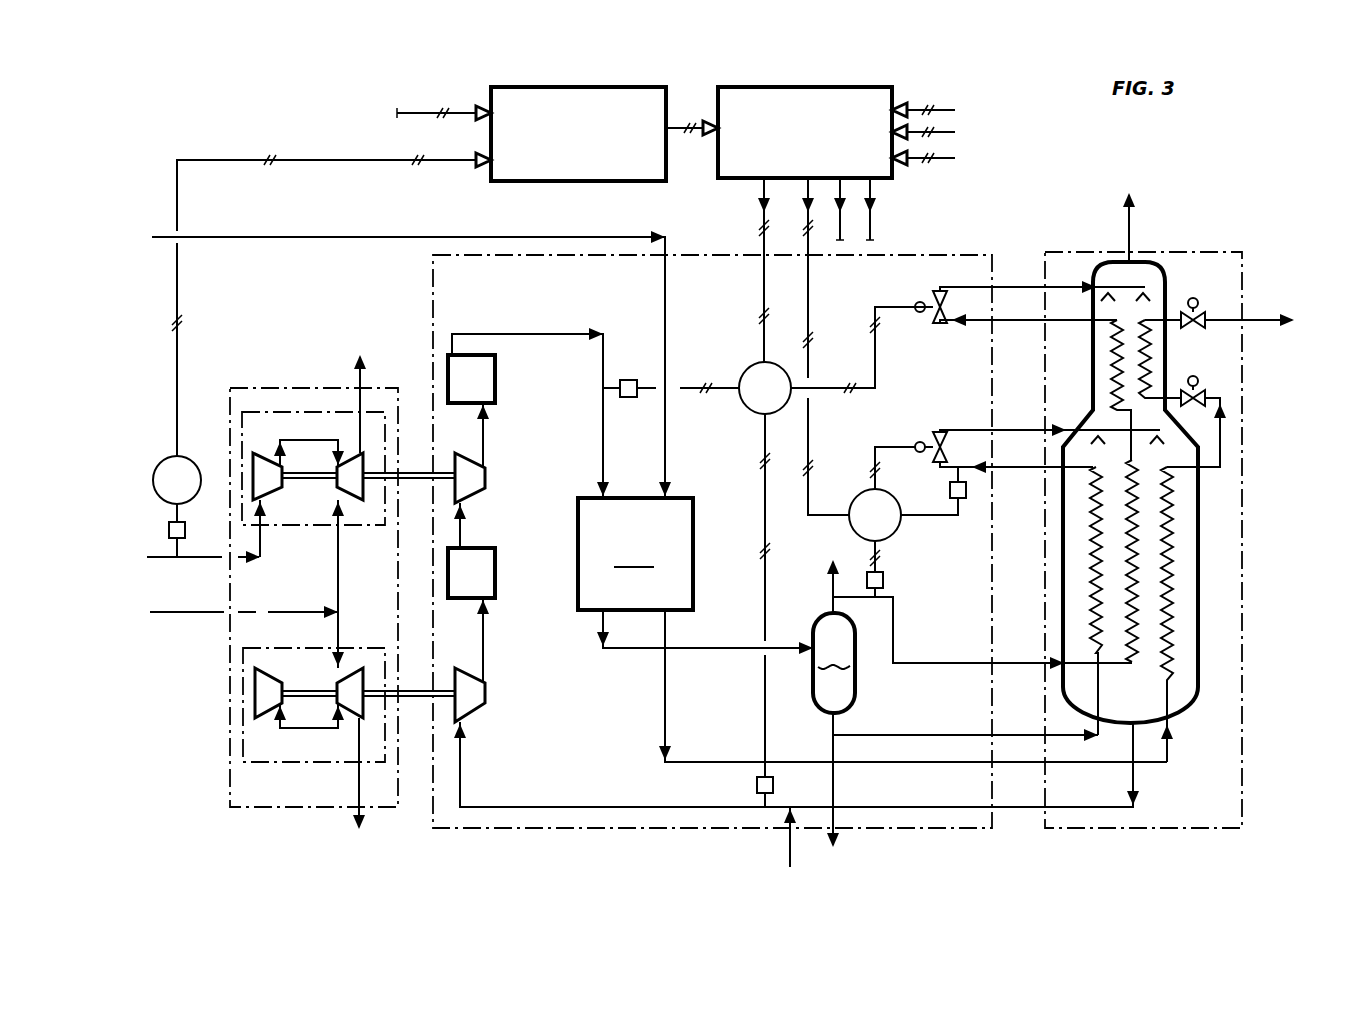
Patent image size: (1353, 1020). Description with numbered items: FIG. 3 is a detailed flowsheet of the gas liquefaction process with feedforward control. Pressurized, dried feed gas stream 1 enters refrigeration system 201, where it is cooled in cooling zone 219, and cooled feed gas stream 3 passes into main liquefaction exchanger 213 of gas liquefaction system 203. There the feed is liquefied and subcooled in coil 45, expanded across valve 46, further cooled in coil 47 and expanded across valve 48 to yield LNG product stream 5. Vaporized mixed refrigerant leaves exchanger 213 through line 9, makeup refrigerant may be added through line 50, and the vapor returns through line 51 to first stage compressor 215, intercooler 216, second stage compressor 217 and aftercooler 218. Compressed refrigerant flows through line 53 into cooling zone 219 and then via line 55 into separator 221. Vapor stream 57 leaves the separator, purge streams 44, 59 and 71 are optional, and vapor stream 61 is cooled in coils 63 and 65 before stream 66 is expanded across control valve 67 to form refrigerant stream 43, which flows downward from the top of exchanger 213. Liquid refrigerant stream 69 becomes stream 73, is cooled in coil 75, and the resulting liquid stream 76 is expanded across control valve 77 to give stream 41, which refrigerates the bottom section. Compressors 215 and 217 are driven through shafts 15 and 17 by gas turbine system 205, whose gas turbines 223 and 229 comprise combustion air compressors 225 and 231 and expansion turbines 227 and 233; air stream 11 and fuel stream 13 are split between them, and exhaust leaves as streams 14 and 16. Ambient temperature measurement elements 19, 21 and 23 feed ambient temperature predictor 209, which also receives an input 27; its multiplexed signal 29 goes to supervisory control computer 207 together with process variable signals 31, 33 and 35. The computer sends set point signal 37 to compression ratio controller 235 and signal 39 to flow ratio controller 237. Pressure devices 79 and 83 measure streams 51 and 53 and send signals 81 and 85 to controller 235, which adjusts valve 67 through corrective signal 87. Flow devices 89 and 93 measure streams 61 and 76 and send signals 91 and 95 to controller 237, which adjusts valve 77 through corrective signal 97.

The feed gas stream 1 is at (318, 236).
The cooled feed gas stream 3 is at (662, 726).
The LNG product stream 5 is at (1258, 318).
The line 9 is at (906, 806).
The air stream 11 is at (210, 556).
The fuel stream 13 is at (196, 610).
The exhaust stream 14 is at (372, 366).
The shaft 15 is at (424, 472).
The exhaust stream 16 is at (354, 814).
The shaft 17 is at (424, 690).
The ambient air temperature measurement/transmission element 19 is at (168, 531).
The ambient air temperature measurement/transmission element 21 is at (154, 462).
The ambient air temperature measurement/transmission element 23 is at (175, 378).
The input signal line 27 is at (432, 110).
The multiplexed signal 29 is at (680, 124).
The representative signal 31 is at (946, 106).
The representative signal 33 is at (950, 134).
The representative signal 35 is at (948, 158).
The signal 37 is at (760, 306).
The signal 39 is at (810, 308).
The refrigerant stream 41 is at (962, 430).
The cooled refrigerant stream 43 is at (1012, 286).
The purge stream 44 is at (1126, 220).
The coil 45 is at (1166, 612).
The valve 46 is at (1204, 394).
The coil 47 is at (1152, 352).
The valve 48 is at (1208, 300).
The line 50 is at (786, 842).
The line 51 is at (512, 792).
The line 53 is at (522, 334).
The refrigerant line to separator 55 is at (728, 648).
The vapor stream 57 is at (826, 606).
The purge stream 59 is at (830, 592).
The MCR vapor stream 61 is at (896, 640).
The cooling coil 63 is at (1128, 522).
The cooling coil 65 is at (1110, 344).
The stream 66 is at (968, 328).
The control valve 67 is at (932, 310).
The liquid refrigerant stream 69 is at (836, 730).
The purge stream 71 is at (846, 840).
The liquid refrigerant stream 73 is at (972, 736).
The cooling coil 75 is at (1090, 568).
The liquid refrigerant stream 76 is at (1018, 470).
The control valve 77 is at (933, 437).
The pressure measurement/transmitter device 79 is at (756, 786).
The signal 81 is at (762, 502).
The pressure measurement/transmitter device 83 is at (630, 380).
The signal 85 is at (696, 390).
The corrective signal 87 is at (800, 382).
The flow measurement/transmitter device 89 is at (884, 581).
The signal 91 is at (882, 570).
The flow measurement/transmitter device 93 is at (949, 491).
The signal 95 is at (956, 520).
The corrective signal 97 is at (868, 452).
The refrigeration system 201 is at (432, 306).
The gas liquefaction system 203 is at (1200, 252).
The gas turbine system 205 is at (318, 387).
The supervisory control computer 207 is at (780, 87).
The ambient temperature predictor 209 is at (560, 87).
The main liquefaction exchanger 213 is at (1199, 562).
The first stage centrifugal compressor 215 is at (488, 684).
The intercooler 216 is at (497, 570).
The second stage centrifugal compressor 217 is at (487, 484).
The aftercooler 218 is at (496, 380).
The cooling zone 219 is at (635, 554).
The separator 221 is at (856, 674).
The gas turbine 223 is at (372, 648).
The combustion air compressor 225 is at (266, 722).
The expansion turbine 227 is at (334, 686).
The gas turbine 229 is at (372, 526).
The combustion air compressor 231 is at (258, 448).
The expansion turbine 233 is at (334, 492).
The compression ratio controller 235 is at (745, 370).
The flow ratio controller 237 is at (852, 502).